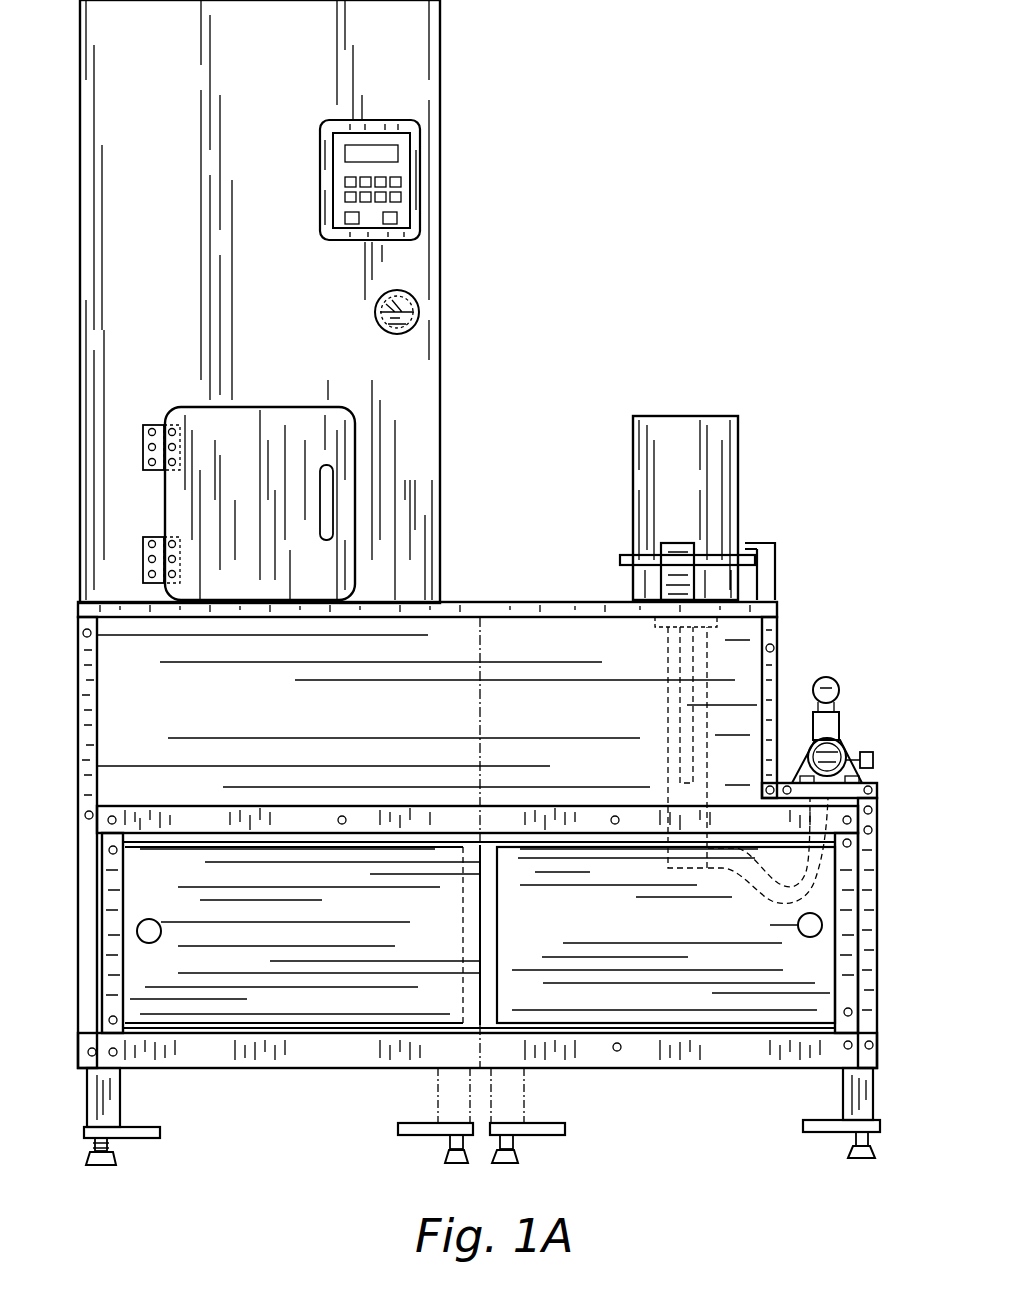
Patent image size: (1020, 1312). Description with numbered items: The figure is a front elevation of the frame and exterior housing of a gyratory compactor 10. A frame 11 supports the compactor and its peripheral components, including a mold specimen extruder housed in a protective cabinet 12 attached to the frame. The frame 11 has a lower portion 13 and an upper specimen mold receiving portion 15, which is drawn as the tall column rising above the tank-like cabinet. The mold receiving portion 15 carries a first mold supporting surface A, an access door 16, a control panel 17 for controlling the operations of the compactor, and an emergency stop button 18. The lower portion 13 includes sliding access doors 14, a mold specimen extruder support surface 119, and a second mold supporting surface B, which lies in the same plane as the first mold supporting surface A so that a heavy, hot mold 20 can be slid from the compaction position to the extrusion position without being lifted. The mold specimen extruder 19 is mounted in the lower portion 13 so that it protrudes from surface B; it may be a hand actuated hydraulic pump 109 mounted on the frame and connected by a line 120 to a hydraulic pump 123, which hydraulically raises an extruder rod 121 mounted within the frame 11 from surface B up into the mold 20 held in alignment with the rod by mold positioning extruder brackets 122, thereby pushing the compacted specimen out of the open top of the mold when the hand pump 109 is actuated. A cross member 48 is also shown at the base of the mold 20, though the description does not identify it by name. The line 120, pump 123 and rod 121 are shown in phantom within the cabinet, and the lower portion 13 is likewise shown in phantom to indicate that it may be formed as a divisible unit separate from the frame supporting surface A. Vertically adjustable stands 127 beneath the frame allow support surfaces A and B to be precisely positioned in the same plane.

The gyratory compactor 10 is at (617, 106).
The upper specimen mold receiving portion 15 is at (76, 103).
The control panel 17 is at (402, 200).
The emergency stop button 18 is at (405, 306).
The access door 16 is at (278, 430).
The mold 20 is at (715, 466).
The cross bar 48 is at (664, 556).
The mold positioning extruder brackets 122 is at (680, 567).
The second mold supporting surface B is at (710, 599).
The cabinet 12 is at (78, 703).
The extruder rod 121 is at (683, 690).
The hydraulic pump 123 is at (668, 776).
The mold specimen extruder 19 is at (846, 670).
The mold specimen extruder support surface 119 is at (787, 778).
The hand actuated hydraulic pump 109 is at (851, 744).
The lower portion 13 is at (78, 901).
The access doors 14 is at (632, 928).
The line 120 is at (763, 888).
The frame 11 is at (78, 1099).
The vertically adjustable stands 127 is at (118, 1160).
The first mold supporting surface A is at (379, 601).